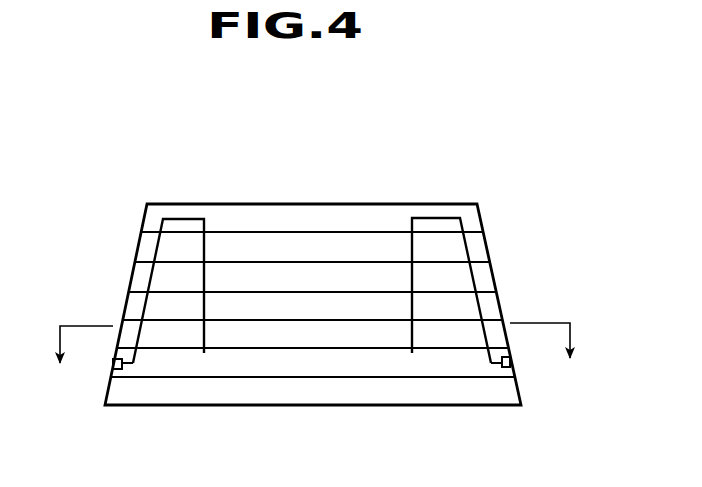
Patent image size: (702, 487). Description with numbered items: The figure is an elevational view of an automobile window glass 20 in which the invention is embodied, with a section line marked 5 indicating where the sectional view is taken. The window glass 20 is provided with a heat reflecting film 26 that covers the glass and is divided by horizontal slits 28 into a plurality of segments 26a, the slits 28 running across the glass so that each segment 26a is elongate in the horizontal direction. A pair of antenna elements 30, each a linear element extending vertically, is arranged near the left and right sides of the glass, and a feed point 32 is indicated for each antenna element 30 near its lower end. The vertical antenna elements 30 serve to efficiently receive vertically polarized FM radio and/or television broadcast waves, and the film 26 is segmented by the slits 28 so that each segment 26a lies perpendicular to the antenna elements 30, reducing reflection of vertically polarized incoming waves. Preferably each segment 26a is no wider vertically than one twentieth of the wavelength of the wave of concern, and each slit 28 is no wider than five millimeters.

The automobile window glass 20 is at (448, 195).
The heat reflecting film 26 is at (348, 387).
The segment 26a is at (289, 215).
The horizontal slit 28 is at (330, 232).
The antenna element 30 is at (205, 251).
The feed point 32 is at (115, 368).
The section line 5- 5 is at (315, 362).